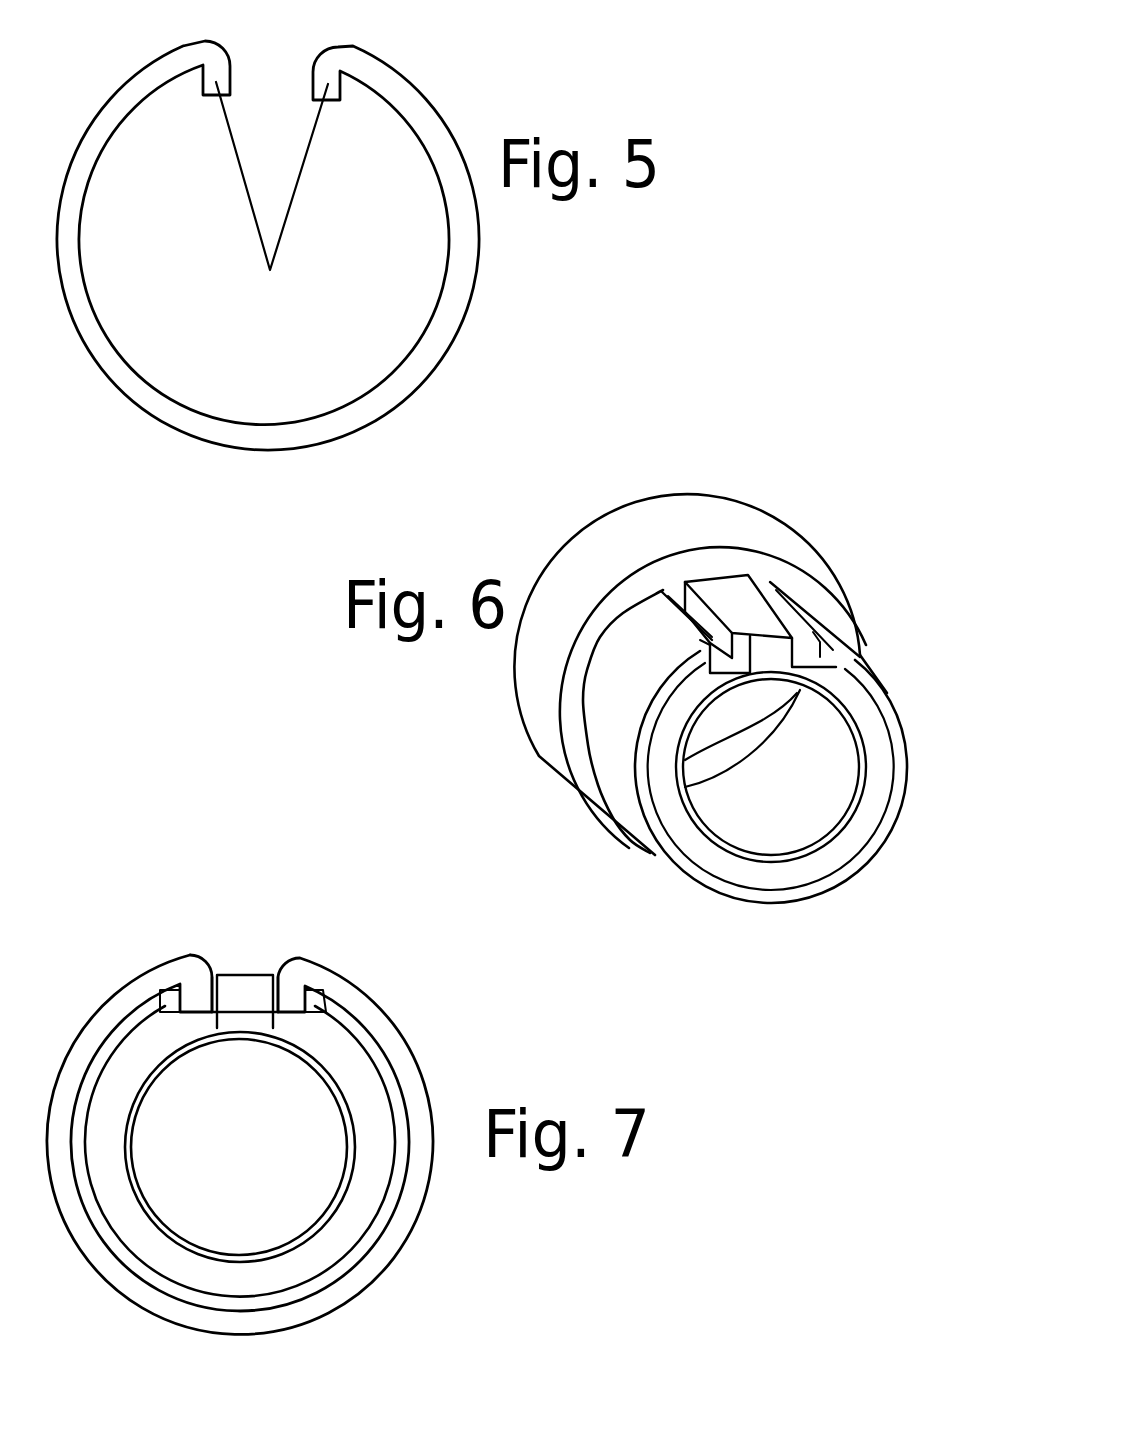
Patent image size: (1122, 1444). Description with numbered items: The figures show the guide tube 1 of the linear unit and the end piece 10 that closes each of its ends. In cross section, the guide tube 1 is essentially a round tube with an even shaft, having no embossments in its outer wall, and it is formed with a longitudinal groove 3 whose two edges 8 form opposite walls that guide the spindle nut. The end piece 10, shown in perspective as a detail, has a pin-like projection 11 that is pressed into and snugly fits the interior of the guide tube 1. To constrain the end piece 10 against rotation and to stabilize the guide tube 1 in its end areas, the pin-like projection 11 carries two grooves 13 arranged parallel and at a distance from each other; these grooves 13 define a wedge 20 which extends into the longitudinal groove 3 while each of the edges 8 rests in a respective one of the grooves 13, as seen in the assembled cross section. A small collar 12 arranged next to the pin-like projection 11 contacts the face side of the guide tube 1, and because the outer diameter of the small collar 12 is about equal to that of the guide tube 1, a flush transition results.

In FIG. 5, the guide tube 1 is at (462, 115).
In FIG. 7, the guide tube 1 is at (385, 1040).
In FIG. 5, the longitudinal groove 3 is at (270, 75).
In FIG. 5, the edge 8 is at (272, 200).
In FIG. 7, the edge 8 is at (333, 1000).
In FIG. 6, the end piece 10 is at (492, 714).
In FIG. 7, the end piece 10 is at (367, 1182).
In FIG. 6, the pin-like projection 11 is at (623, 793).
In FIG. 6, the small collar 12 is at (645, 528).
In FIG. 6, the grooves 13 is at (718, 665).
In FIG. 7, the grooves 13 is at (214, 981).
In FIG. 6, the wedge 20 is at (735, 597).
In FIG. 7, the wedge 20 is at (242, 990).